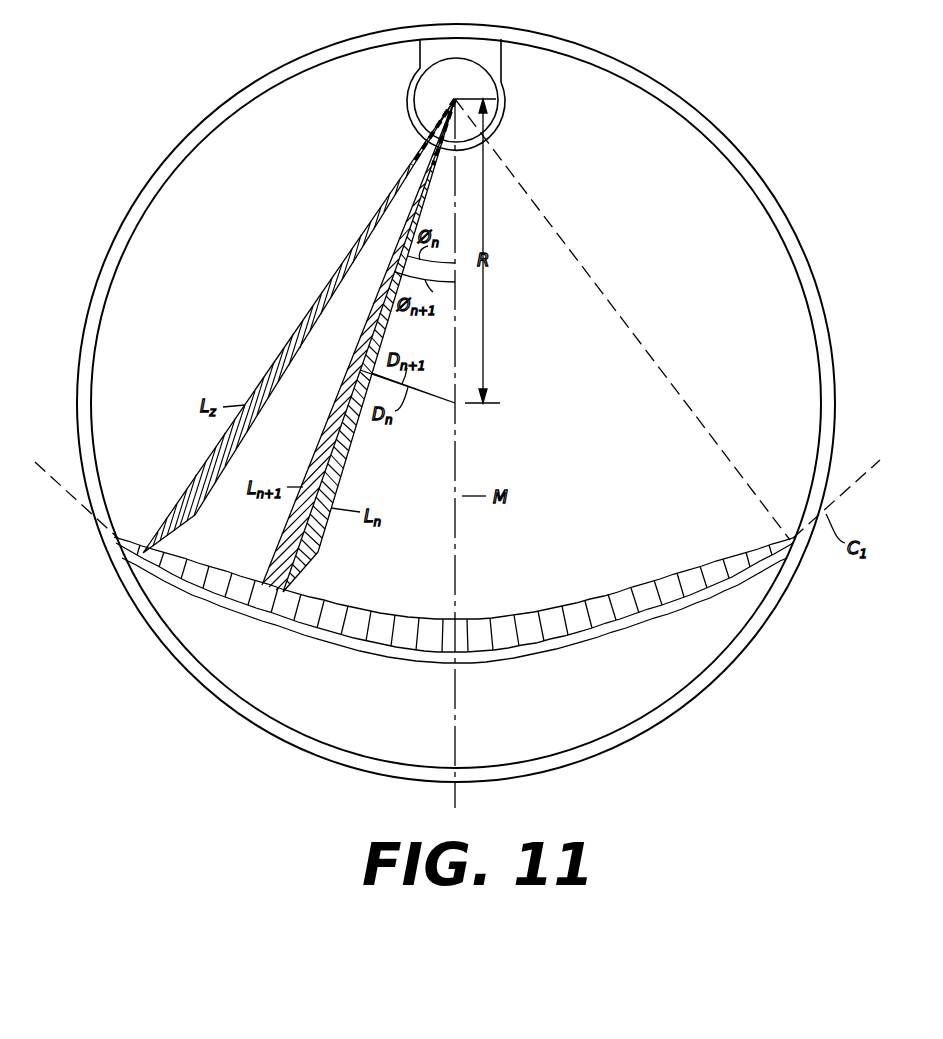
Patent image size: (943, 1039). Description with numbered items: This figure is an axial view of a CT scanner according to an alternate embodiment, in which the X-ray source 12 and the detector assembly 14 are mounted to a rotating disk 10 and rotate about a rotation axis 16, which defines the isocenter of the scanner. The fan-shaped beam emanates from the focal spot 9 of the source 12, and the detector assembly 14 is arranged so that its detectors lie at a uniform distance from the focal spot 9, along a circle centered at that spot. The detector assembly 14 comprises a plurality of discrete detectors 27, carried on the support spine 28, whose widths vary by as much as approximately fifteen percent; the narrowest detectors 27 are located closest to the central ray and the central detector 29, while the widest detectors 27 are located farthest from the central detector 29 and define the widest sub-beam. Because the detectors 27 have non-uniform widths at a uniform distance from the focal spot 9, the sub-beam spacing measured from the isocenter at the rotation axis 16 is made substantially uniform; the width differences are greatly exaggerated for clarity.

The focal spot 9 is at (452, 97).
The disk 10 is at (718, 123).
The source 12 is at (505, 108).
The detector assembly 14 is at (677, 560).
The rotation axis 16 is at (492, 422).
The detectors 27 is at (606, 606).
The support spine 28 is at (584, 648).
The central detector 29 is at (453, 630).